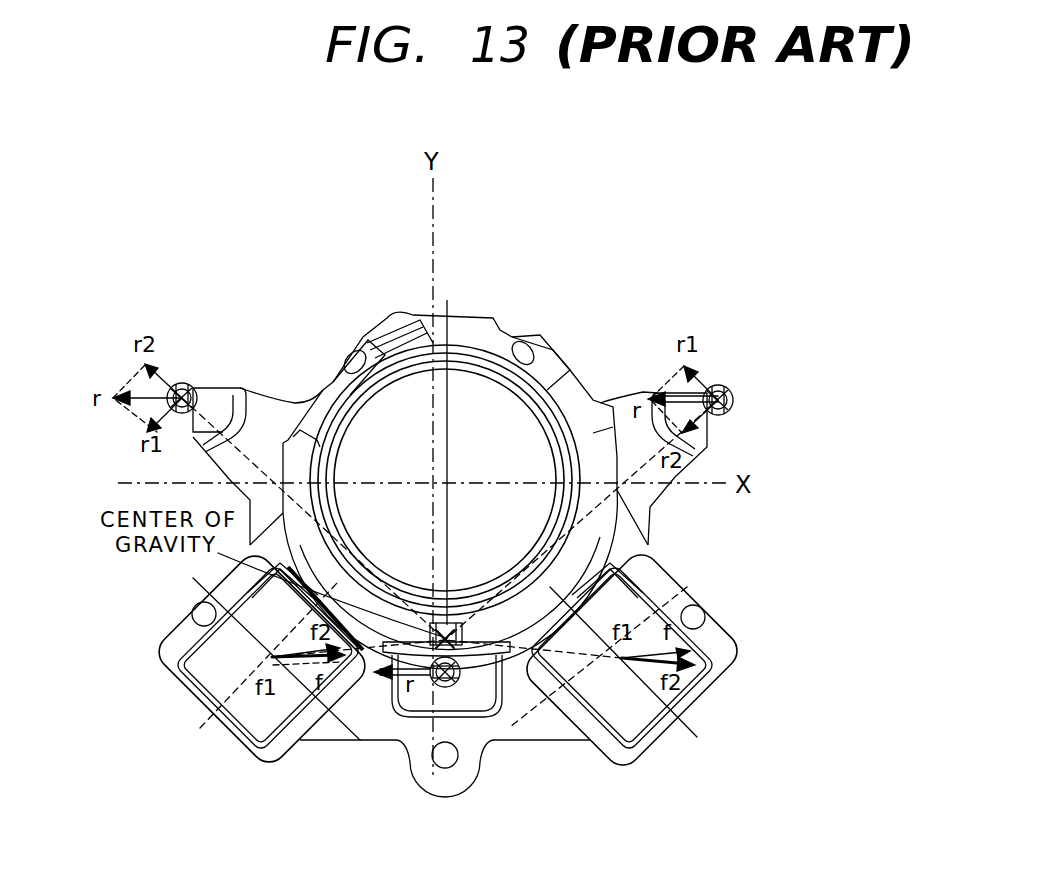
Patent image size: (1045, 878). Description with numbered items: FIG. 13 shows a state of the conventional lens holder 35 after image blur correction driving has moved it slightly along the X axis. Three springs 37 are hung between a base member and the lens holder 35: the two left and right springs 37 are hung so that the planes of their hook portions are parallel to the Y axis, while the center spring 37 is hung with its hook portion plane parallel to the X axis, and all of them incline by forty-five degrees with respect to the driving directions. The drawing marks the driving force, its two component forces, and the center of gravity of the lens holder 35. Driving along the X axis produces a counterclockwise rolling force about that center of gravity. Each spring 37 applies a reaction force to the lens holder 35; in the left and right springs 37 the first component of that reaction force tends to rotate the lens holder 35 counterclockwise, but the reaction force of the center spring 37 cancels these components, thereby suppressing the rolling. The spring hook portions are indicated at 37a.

The lens holder 35 is at (515, 722).
The springs 37 is at (455, 655).
The elastic member portions 37a is at (170, 394).